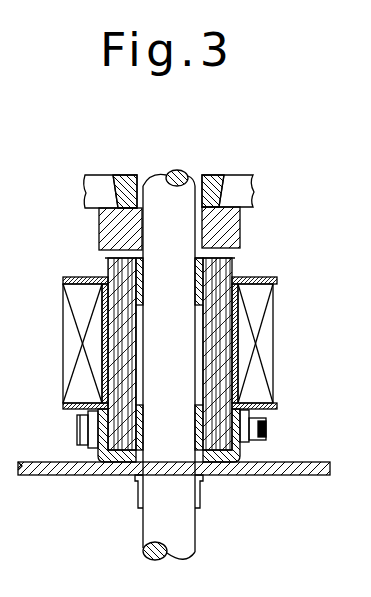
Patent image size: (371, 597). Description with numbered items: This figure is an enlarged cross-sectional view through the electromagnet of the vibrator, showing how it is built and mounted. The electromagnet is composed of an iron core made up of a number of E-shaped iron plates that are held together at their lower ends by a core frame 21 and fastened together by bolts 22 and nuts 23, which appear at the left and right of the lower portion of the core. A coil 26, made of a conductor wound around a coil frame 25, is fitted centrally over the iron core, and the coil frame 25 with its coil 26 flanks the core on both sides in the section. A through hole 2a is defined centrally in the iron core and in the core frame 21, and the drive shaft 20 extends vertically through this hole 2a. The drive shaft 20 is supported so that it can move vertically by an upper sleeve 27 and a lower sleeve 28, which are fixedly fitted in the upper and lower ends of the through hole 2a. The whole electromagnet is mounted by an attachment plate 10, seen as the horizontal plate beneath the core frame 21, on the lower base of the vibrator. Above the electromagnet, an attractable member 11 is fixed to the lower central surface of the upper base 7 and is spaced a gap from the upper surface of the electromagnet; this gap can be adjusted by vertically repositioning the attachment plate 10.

The through hole 2a is at (197, 358).
The upper base 7 is at (243, 185).
The attachment plate 10 is at (290, 476).
The attractable member 11 is at (233, 223).
The drive shaft 20 is at (180, 533).
The core frame 21 is at (248, 458).
The bolts 22 is at (78, 431).
The nuts 23 is at (252, 415).
The coil frame 25 is at (272, 282).
The coil 26 is at (278, 306).
The sleeve 27 is at (200, 258).
The sleeve 28 is at (113, 463).